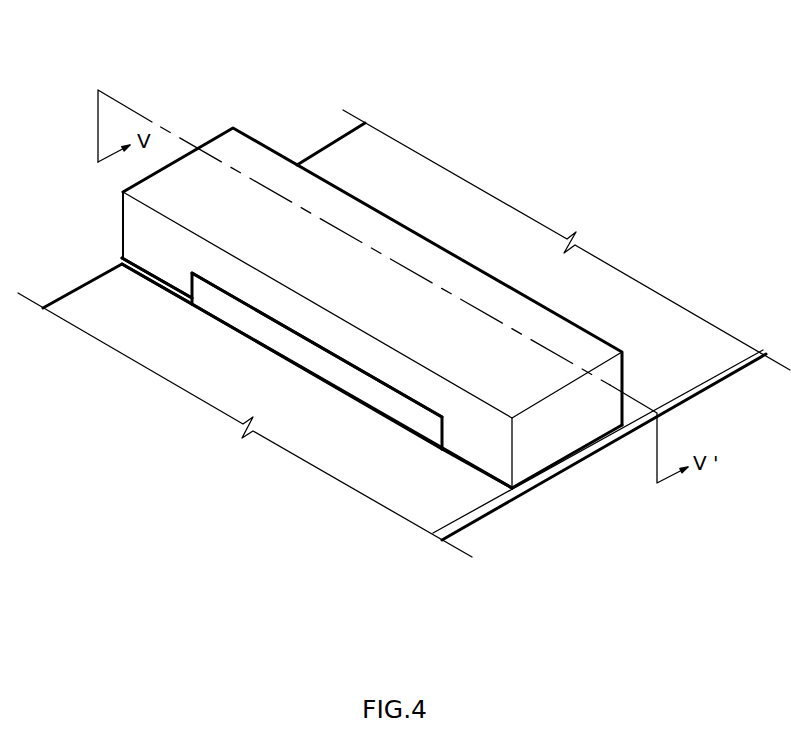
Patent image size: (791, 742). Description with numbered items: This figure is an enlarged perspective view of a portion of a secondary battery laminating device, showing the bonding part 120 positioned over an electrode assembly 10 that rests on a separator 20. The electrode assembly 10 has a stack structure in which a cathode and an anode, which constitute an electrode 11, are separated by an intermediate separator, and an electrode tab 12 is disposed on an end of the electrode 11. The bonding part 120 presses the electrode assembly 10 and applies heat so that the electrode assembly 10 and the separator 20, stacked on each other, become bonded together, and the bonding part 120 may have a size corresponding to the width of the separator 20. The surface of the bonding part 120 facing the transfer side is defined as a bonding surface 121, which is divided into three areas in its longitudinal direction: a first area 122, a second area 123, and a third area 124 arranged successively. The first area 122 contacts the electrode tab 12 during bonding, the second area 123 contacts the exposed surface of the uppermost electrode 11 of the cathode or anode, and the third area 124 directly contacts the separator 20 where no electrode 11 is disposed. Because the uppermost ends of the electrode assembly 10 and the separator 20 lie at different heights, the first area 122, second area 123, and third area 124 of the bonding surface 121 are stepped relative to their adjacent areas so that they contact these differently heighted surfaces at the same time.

The electrode assembly 10 is at (401, 331).
The electrode 11 is at (255, 324).
The electrode tab 12 is at (160, 281).
The separator 20 is at (390, 487).
The bonding part 120 is at (374, 287).
The bonding surface 121 is at (547, 135).
The first area 122 is at (141, 265).
The second area 123 is at (317, 345).
The third area 124 is at (468, 462).